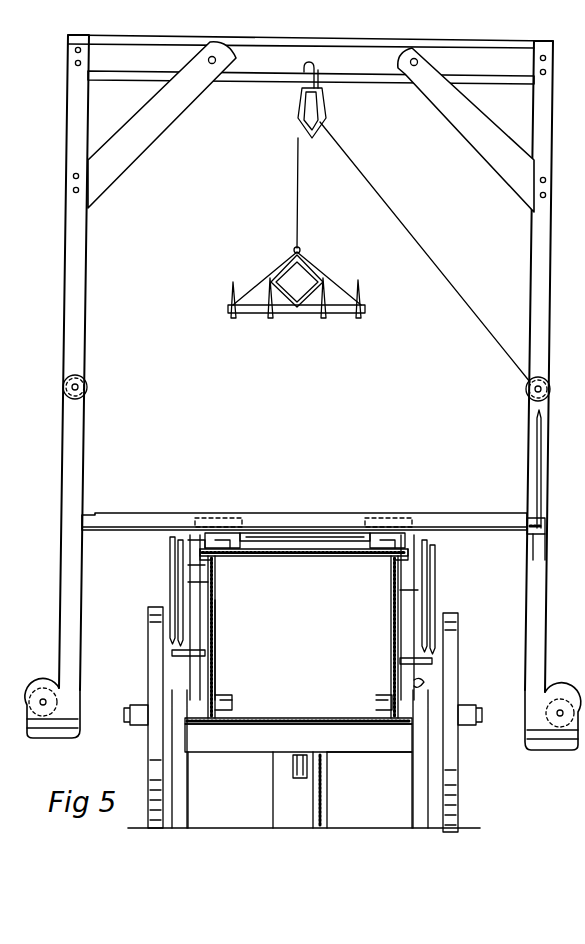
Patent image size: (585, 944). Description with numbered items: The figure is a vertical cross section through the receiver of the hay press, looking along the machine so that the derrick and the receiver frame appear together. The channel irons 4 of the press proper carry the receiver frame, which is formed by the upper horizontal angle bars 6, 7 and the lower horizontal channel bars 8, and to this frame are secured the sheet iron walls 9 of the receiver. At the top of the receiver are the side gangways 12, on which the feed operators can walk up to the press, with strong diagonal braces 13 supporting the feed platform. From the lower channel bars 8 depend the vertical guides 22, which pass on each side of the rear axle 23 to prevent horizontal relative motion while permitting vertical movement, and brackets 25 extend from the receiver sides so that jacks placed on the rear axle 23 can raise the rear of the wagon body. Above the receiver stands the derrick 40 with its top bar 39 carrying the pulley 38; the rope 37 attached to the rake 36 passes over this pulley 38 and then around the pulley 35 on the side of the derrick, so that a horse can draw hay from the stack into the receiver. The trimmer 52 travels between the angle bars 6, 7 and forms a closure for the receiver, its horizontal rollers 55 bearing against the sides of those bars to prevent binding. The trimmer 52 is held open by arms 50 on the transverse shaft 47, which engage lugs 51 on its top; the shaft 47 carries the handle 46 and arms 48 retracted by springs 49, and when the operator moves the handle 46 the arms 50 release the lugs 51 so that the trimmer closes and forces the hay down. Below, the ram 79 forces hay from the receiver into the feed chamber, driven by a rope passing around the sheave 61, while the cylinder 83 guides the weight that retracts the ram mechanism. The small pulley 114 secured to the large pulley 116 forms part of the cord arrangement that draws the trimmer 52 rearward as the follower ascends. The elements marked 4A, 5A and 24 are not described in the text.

The channel irons of the press proper 4 is at (41, 705).
The wheeled foot of standard 4A is at (562, 742).
The clamp 5A is at (234, 700).
The upper horizontal angle bar 6 is at (190, 544).
The upper horizontal angle bar 7 is at (198, 568).
The lower horizontal channel bar 8 is at (424, 688).
The sheet iron wall 9 is at (217, 640).
The side gangway 12 is at (118, 512).
The diagonal brace 13 is at (195, 596).
The vertical guide 22 is at (412, 790).
The rear axle 23 is at (338, 738).
The column 24 is at (460, 686).
The bracket 25 is at (175, 652).
The pulley 35 is at (63, 389).
The rake 36 is at (306, 314).
The rope 37 is at (438, 246).
The pulley 38 is at (297, 118).
The top bar of derrick 39 is at (385, 78).
The derrick 40 is at (546, 300).
The handle 46 is at (535, 430).
The transverse shaft 47 is at (332, 522).
The arm 48 is at (533, 556).
The spring 49 is at (532, 535).
The arm 50 is at (265, 528).
The lug 51 is at (288, 546).
The trimmer 52 is at (330, 558).
The horizontal roller 55 is at (222, 560).
The sheave 61 is at (312, 773).
The ram 79 is at (298, 640).
The cylinder 83 is at (290, 790).
The small pulley 114 is at (178, 560).
The large pulley 116 is at (172, 548).